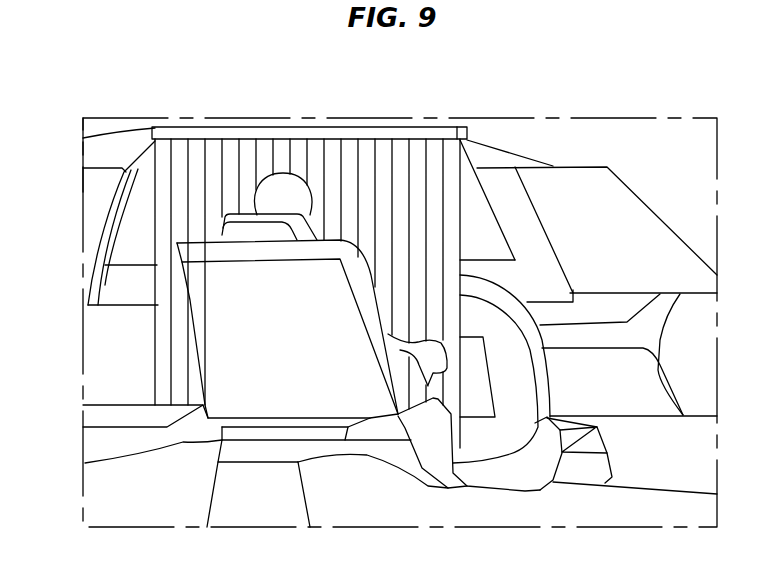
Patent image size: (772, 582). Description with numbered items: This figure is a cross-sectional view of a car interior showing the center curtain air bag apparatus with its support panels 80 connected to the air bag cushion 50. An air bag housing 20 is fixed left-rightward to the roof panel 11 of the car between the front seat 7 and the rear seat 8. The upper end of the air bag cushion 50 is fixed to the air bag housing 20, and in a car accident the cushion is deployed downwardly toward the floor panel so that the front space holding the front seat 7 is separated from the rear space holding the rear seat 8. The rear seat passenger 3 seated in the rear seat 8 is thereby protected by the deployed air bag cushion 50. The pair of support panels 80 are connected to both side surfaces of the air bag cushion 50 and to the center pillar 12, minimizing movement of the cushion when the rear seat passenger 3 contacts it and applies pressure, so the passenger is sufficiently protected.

The roof panel 11 is at (120, 136).
The center pillar 12 is at (113, 225).
The support panel 80 is at (123, 250).
The air bag housing 20 is at (415, 133).
The air bag cushion 50 is at (337, 163).
The rear seat passenger 3 is at (272, 190).
The rear seat 8 is at (257, 375).
The front seat 7 is at (504, 408).